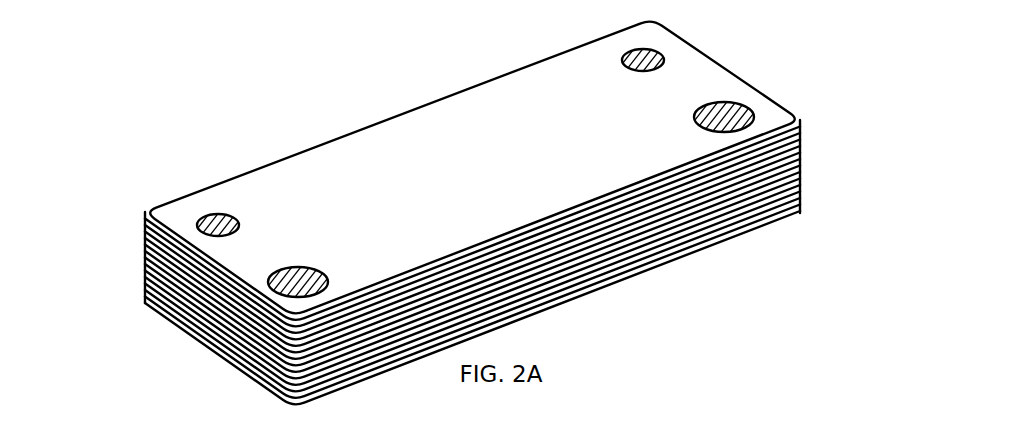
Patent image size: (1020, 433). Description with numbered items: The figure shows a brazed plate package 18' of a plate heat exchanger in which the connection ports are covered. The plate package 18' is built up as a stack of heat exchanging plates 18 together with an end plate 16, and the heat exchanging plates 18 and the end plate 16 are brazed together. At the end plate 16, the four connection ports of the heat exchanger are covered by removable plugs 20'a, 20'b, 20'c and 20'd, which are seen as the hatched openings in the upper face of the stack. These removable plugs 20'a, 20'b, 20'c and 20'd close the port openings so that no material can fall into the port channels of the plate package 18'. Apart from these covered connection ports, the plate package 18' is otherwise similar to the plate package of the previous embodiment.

The heat exchanging plates 18 is at (462, 205).
The brazed plate package 18' is at (832, 115).
The end plate 16 is at (350, 190).
The removable plug 20'a is at (298, 176).
The removable plug 20'b is at (728, 94).
The removable plug 20'c is at (210, 148).
The removable plug 20'd is at (568, 59).